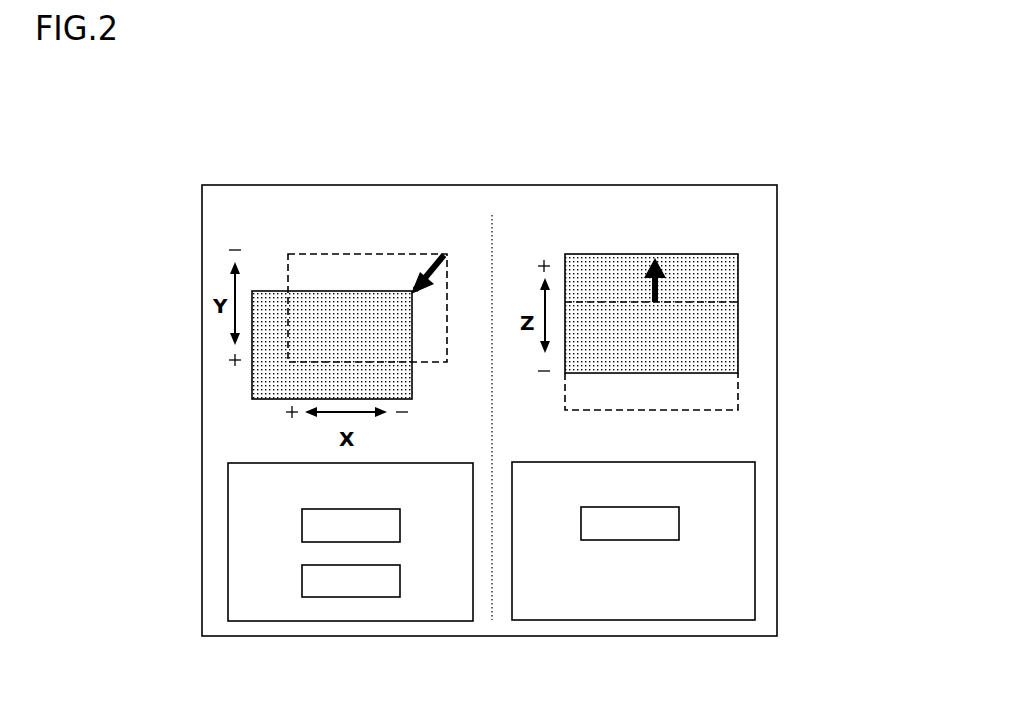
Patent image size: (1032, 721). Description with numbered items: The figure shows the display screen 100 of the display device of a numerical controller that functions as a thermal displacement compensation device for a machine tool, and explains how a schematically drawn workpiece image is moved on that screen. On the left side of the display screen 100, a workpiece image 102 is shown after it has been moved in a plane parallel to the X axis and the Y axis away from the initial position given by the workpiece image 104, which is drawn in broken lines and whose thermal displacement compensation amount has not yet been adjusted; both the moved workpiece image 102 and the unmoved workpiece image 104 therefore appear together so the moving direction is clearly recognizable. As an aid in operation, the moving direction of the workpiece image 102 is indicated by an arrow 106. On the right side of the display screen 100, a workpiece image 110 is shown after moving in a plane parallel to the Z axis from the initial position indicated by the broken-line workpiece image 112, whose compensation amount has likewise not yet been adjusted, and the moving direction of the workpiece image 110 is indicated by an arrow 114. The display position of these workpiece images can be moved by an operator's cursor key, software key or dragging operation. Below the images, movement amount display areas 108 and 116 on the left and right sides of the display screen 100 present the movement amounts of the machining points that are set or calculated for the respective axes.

The display screen 100 is at (720, 210).
The workpiece image 102 is at (268, 303).
The workpiece image 104 is at (347, 270).
The arrow 106 is at (432, 260).
The movement amount display area 108 is at (245, 520).
The workpiece image 110 is at (715, 291).
The workpiece image 112 is at (715, 392).
The arrow 114 is at (648, 276).
The movement amount display area 116 is at (722, 507).